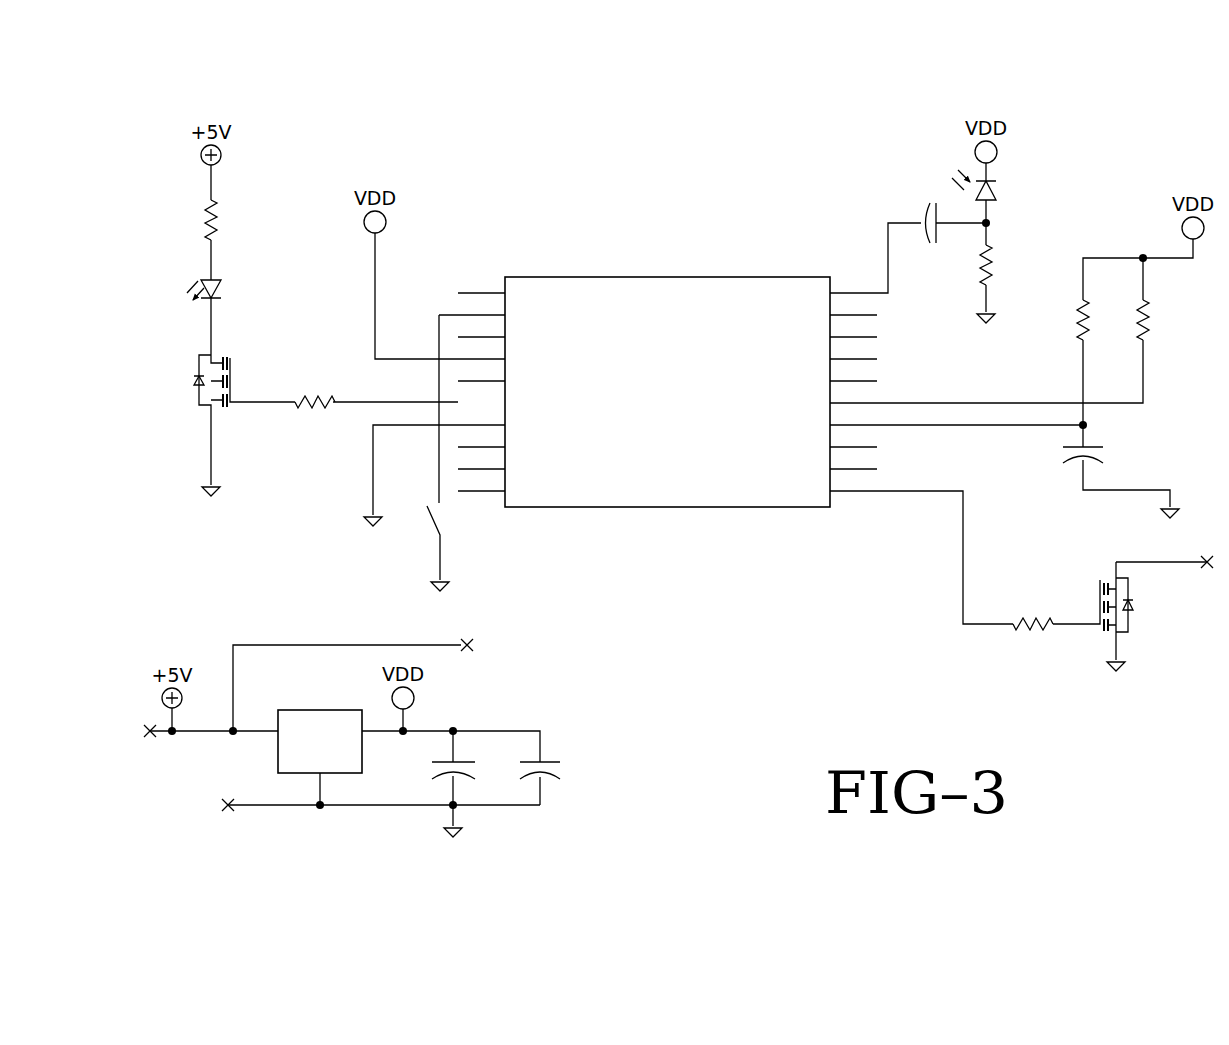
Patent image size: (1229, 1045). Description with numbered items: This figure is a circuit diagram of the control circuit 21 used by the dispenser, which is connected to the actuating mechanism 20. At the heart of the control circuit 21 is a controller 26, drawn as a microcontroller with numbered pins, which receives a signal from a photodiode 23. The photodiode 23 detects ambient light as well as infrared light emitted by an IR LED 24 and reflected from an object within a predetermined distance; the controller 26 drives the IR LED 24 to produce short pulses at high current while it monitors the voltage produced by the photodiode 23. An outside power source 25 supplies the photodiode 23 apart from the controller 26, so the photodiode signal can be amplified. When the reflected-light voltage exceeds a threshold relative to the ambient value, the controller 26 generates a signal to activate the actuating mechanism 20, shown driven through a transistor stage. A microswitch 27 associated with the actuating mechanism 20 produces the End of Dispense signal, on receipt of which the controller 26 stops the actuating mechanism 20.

The actuating mechanism 20 is at (994, 652).
The control circuit 21 is at (458, 184).
The photodiode 23 is at (1033, 186).
The infrared light emitting diode 24 is at (265, 283).
The outside power source 25 is at (527, 657).
The controller 26 is at (588, 275).
The microswitch 27 is at (462, 573).